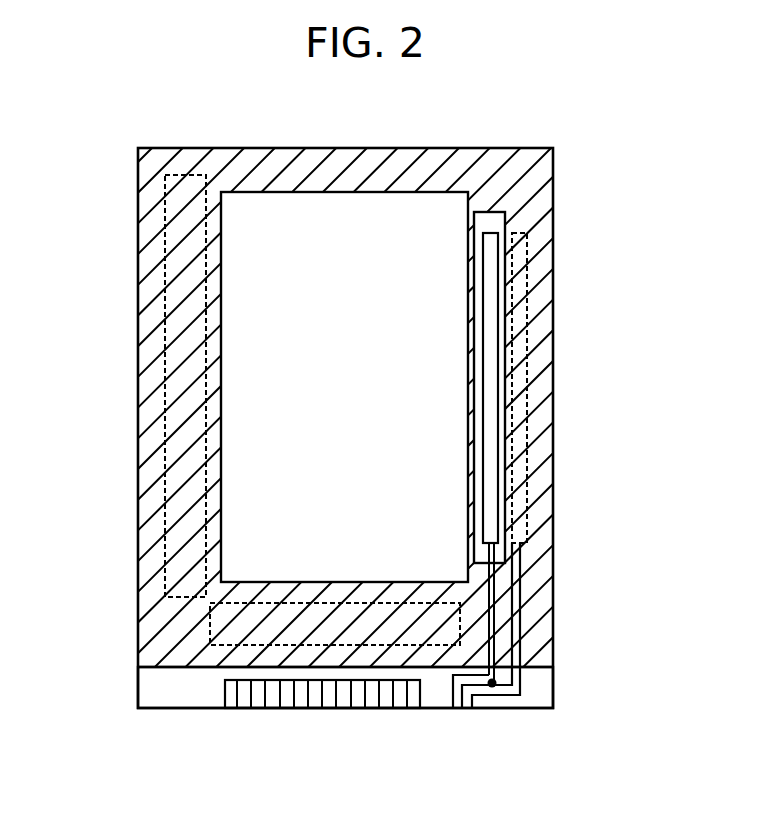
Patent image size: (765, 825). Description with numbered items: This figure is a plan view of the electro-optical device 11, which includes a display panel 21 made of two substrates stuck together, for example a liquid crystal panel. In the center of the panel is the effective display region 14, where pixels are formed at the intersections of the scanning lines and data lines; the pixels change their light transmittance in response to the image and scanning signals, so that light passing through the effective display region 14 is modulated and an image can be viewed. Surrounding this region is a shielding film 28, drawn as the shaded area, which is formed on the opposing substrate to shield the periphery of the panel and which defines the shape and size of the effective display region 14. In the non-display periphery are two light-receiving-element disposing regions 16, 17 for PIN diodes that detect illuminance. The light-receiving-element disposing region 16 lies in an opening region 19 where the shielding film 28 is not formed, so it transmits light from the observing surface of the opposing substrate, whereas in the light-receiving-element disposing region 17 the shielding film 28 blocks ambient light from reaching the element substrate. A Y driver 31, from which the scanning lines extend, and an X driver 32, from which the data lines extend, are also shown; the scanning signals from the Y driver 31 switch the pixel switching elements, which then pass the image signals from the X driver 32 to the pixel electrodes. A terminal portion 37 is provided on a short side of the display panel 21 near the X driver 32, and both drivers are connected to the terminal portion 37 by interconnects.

The electro-optical device 11 is at (566, 509).
The effective display region 14 is at (350, 223).
The light-receiving-element disposing region 16 is at (492, 350).
The light-receiving-element disposing region 17 is at (527, 398).
The opening region 19 is at (503, 223).
The display panel 21 is at (535, 696).
The shielding film 28 is at (517, 165).
The Y driver 31 is at (163, 413).
The X driver 32 is at (210, 645).
The terminal portion 37 is at (335, 707).